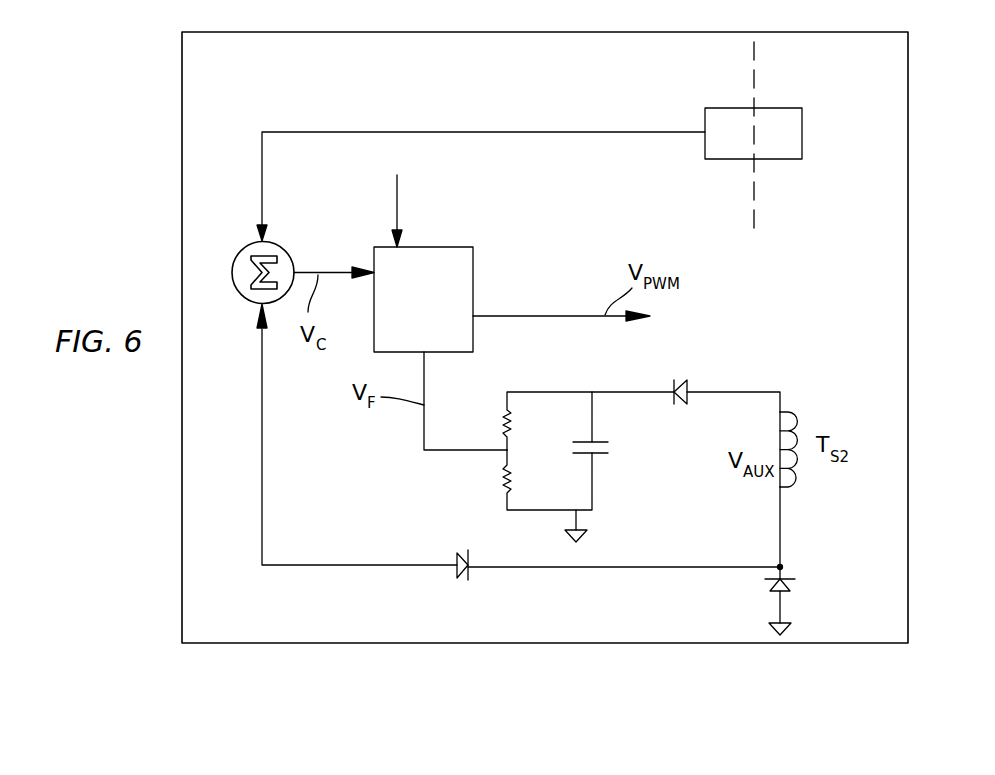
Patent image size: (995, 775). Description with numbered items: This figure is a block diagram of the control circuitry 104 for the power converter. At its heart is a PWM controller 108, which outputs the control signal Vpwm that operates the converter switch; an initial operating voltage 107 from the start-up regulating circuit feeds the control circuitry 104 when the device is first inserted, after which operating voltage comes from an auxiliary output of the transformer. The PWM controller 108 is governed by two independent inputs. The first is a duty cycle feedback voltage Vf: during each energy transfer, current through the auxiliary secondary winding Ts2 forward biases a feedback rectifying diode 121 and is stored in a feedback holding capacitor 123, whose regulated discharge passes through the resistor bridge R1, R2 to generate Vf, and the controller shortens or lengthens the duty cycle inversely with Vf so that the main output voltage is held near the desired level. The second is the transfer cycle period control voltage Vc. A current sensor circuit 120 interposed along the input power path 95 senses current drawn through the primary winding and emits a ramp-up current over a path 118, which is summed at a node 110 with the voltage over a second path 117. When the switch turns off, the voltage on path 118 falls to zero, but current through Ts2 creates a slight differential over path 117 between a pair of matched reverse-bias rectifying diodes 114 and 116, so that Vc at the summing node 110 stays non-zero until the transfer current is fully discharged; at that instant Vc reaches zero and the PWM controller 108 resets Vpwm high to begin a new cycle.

The control circuitry 104 is at (182, 80).
The input power path 95 is at (754, 70).
The current sensor circuit 120 is at (802, 133).
The path 118 is at (490, 130).
The summing node 110 is at (284, 250).
The initial operating voltage 107 is at (397, 185).
The PWM controller 108 is at (447, 247).
The feedback holding capacitor 123 is at (645, 471).
The feedback rectifying diode 121 is at (700, 372).
The reverse-bias rectifying diode 116 is at (820, 572).
The second path 117 is at (262, 392).
The reverse-bias rectifying diode 114 is at (465, 582).